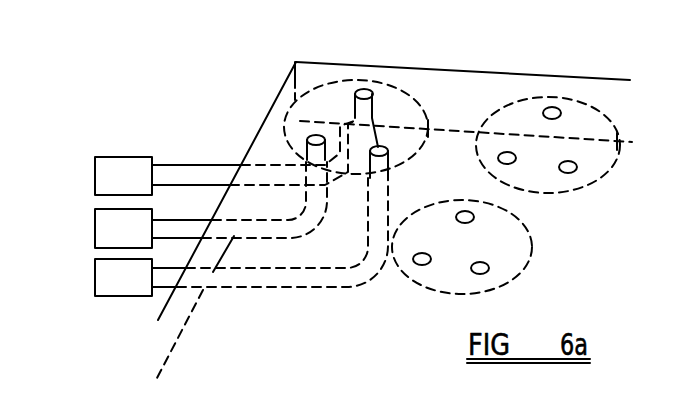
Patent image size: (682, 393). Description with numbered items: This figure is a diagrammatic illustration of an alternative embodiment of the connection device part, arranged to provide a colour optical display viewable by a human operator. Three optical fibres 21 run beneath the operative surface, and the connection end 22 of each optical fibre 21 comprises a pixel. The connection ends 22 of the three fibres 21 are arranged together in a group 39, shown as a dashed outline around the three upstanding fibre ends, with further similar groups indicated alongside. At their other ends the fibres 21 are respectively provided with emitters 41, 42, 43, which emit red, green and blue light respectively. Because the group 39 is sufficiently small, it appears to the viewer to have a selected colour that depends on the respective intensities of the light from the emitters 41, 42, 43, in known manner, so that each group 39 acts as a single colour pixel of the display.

The optical fibre 21 is at (185, 230).
The connection end 22 is at (315, 135).
The group 39 is at (430, 106).
The emitter 41 is at (95, 183).
The emitter 42 is at (95, 238).
The emitter 43 is at (95, 285).